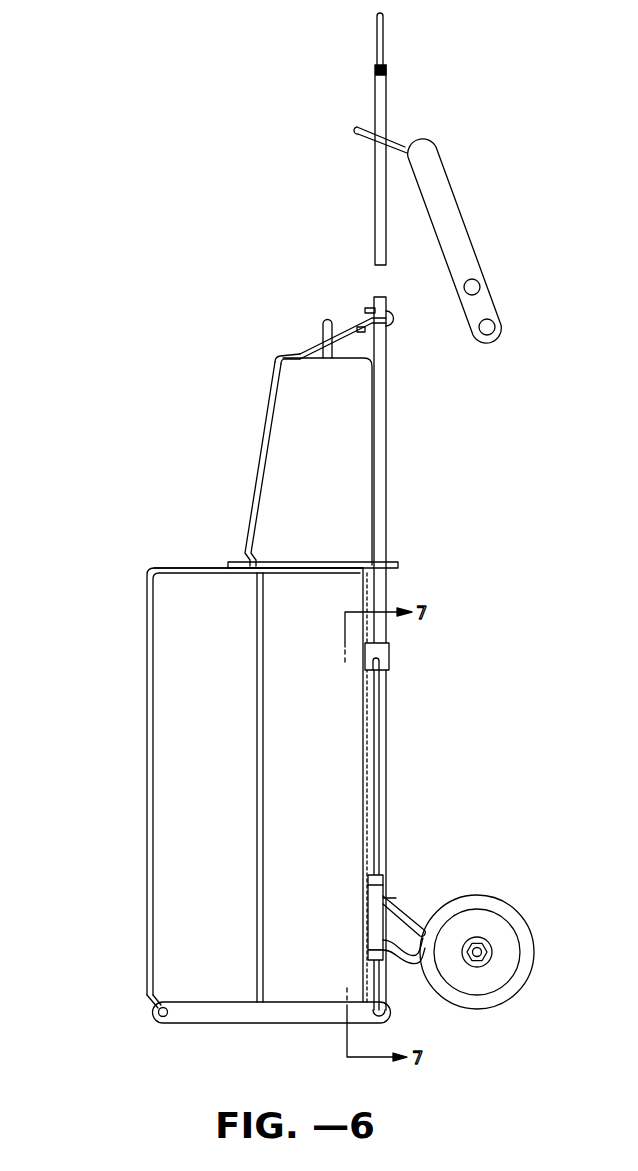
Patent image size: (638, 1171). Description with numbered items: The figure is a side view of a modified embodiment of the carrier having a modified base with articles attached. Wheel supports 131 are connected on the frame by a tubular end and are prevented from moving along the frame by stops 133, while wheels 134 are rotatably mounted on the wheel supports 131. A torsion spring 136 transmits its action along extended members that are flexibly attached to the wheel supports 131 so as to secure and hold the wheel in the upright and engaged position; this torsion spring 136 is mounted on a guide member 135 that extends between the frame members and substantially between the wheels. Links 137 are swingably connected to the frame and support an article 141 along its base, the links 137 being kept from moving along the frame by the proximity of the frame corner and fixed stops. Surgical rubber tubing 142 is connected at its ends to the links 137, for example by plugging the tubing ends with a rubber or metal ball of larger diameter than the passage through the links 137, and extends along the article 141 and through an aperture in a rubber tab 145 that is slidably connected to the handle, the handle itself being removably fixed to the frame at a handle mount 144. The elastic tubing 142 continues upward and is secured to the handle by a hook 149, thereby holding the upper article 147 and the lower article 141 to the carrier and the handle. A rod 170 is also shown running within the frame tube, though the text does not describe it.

The wheel supports 131 is at (392, 938).
The stops 133 is at (383, 874).
The wheels 134 is at (493, 1002).
The guide member 135 is at (388, 800).
The torsion spring 136 is at (423, 930).
The links 137 is at (250, 1015).
The article 141 is at (170, 912).
The surgical rubber tubing 142 is at (182, 567).
The handle mount 144 is at (389, 658).
The rubber tab 145 is at (463, 242).
The article 147 is at (352, 478).
The hook 149 is at (396, 320).
The rod 170 is at (384, 717).